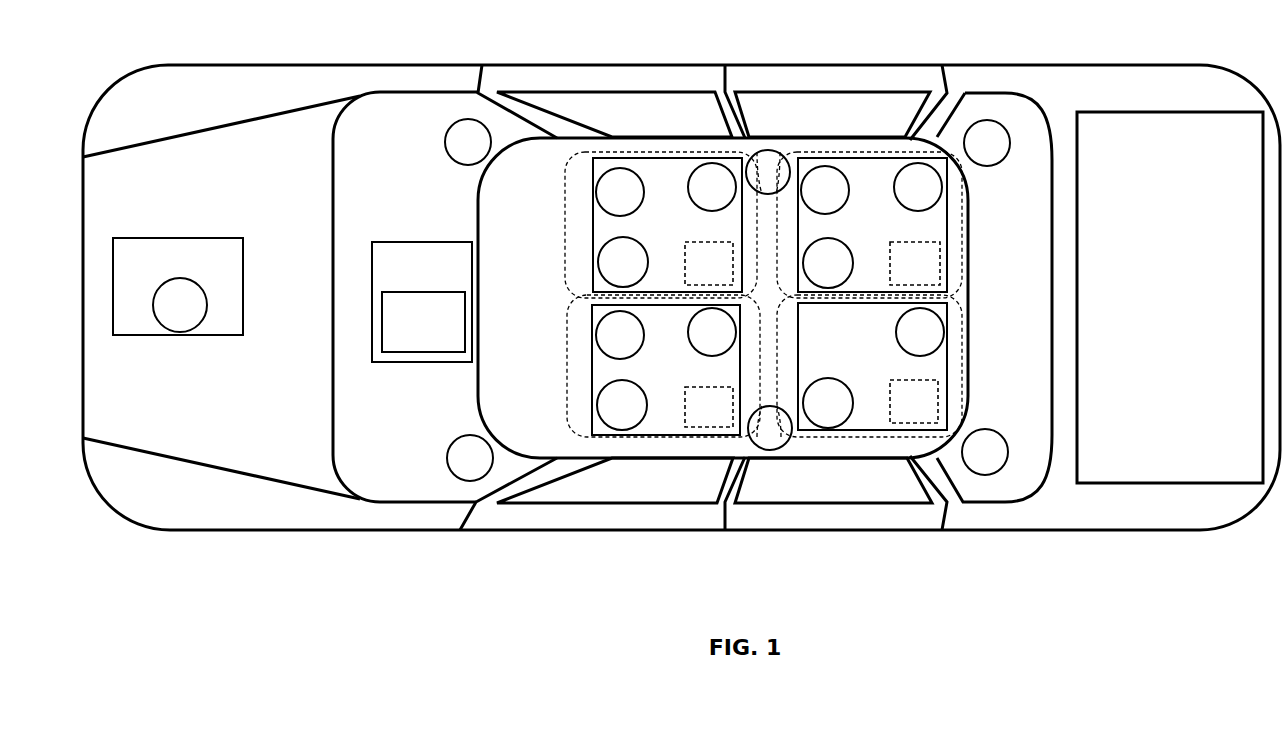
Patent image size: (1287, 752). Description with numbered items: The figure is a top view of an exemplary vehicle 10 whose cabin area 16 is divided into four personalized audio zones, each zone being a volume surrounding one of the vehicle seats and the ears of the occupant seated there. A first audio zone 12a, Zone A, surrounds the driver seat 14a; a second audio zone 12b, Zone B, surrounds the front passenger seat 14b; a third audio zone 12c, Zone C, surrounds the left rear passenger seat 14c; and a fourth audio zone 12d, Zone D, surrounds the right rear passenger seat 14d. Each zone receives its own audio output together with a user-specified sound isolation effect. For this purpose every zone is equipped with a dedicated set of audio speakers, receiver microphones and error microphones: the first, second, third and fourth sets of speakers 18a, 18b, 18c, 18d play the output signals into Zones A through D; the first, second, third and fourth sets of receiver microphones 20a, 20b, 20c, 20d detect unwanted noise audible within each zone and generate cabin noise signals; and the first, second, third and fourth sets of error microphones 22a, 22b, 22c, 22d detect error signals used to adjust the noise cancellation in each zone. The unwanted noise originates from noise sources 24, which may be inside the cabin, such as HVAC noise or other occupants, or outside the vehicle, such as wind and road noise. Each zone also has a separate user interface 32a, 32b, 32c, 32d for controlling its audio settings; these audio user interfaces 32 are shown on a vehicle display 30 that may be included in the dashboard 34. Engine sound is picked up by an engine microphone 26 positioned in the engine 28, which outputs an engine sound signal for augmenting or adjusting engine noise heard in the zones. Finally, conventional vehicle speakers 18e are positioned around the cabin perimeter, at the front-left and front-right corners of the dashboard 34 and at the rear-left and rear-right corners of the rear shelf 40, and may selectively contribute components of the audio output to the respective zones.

The vehicle 10 is at (1025, 63).
The dashboard 34 is at (375, 140).
The cabin area 16 is at (555, 168).
The rear shelf 40 is at (1038, 163).
The engine 28 is at (228, 237).
The engine microphone 26 is at (205, 308).
The vehicle display 30 is at (367, 283).
The audio user interface 32 is at (388, 337).
The conventional vehicle speakers 18e is at (445, 130).
The first audio zone 12a is at (566, 382).
The second audio zone 12b is at (567, 212).
The third audio zone 12c is at (965, 378).
The fourth audio zone 12d is at (963, 228).
The driver seat 14a is at (592, 376).
The front passenger seat 14b is at (592, 254).
The vehicle seat 14c is at (949, 354).
The vehicle seat 14d is at (948, 192).
The first set of speakers 18a is at (593, 312).
The second set of speakers 18b is at (605, 163).
The third set of speakers 18c is at (778, 340).
The fourth set of speakers 18d is at (813, 165).
The first set of receiver microphones 20a is at (610, 430).
The second set of receiver microphones 20b is at (600, 268).
The third set of receiver microphones 20c is at (815, 424).
The fourth set of receiver microphones 20d is at (855, 270).
The first set of error microphones 22a is at (736, 340).
The second set of error microphones 22b is at (692, 164).
The third set of error microphones 22c is at (946, 333).
The fourth set of error microphones 22d is at (897, 168).
The noise sources 24 is at (752, 148).
The user interface 32a is at (700, 428).
The user interface 32b is at (687, 283).
The user interface 32c is at (898, 423).
The user interface 32d is at (941, 265).